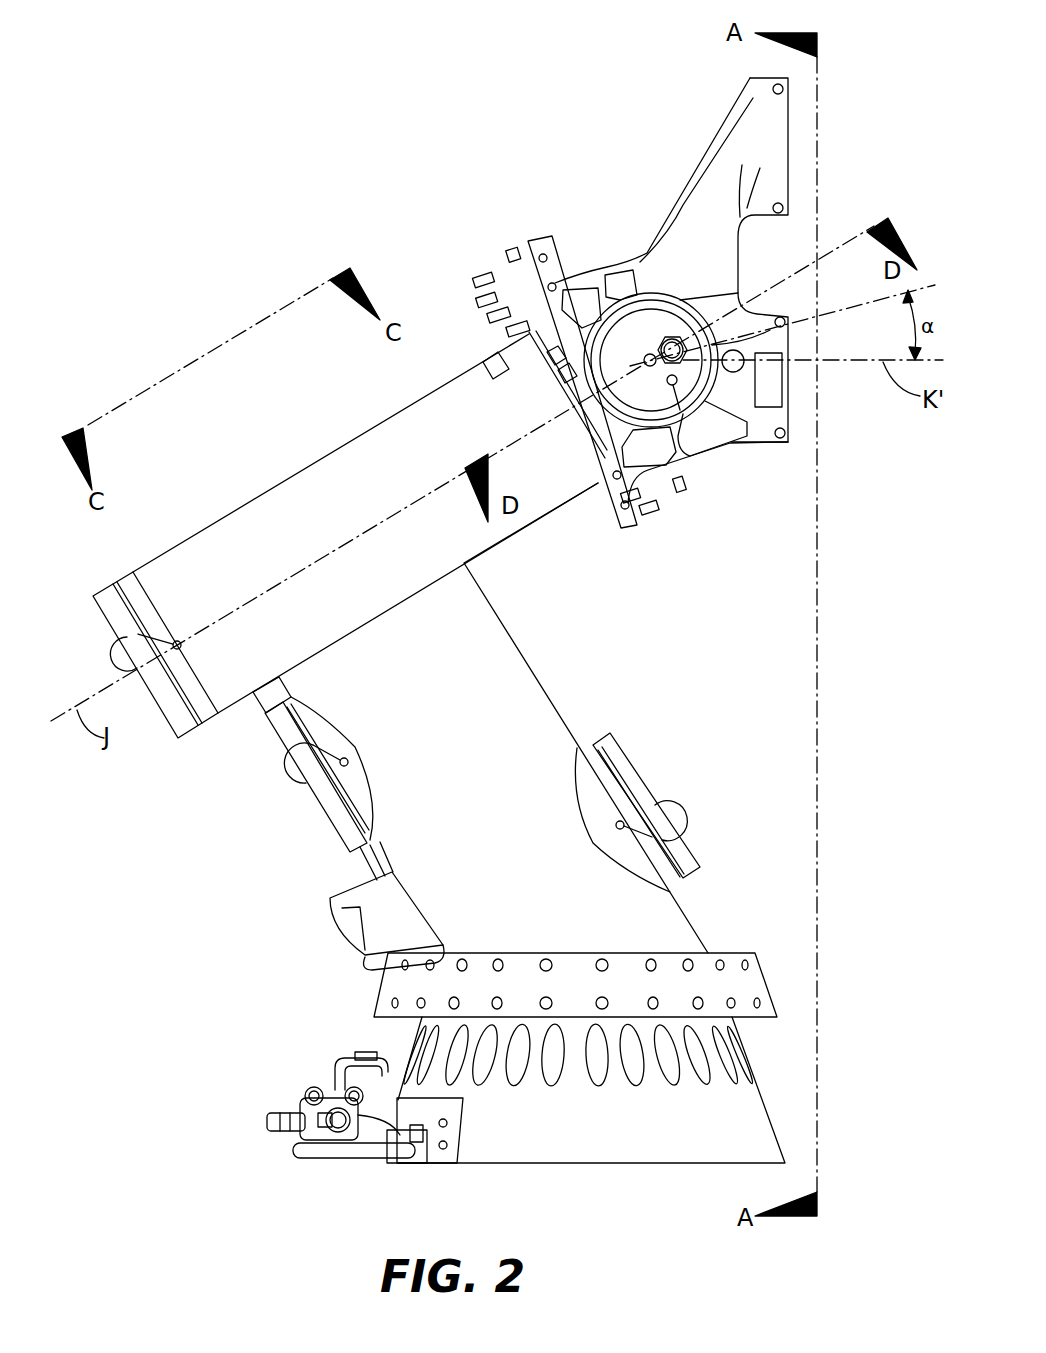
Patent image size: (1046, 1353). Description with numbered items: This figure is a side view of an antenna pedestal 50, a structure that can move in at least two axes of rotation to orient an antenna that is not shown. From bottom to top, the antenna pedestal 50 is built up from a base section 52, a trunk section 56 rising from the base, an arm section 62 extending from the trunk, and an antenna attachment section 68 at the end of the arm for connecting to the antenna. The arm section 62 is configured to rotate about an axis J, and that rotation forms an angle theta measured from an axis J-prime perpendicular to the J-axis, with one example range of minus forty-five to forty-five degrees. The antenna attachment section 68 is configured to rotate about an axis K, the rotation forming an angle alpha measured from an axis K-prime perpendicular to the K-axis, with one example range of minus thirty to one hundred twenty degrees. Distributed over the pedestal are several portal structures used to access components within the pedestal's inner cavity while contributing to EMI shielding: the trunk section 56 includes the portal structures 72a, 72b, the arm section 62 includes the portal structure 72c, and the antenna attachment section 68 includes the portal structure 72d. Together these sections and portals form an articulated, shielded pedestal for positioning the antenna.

The antenna pedestal 50 is at (368, 156).
The base section 52 is at (595, 1166).
The trunk section 56 is at (511, 670).
The arm section 62 is at (333, 473).
The antenna attachment section 68 is at (700, 197).
The portal structure 72a is at (628, 757).
The portal structure 72b is at (328, 815).
The portal structure 72c is at (170, 718).
The portal structure 72d is at (628, 320).